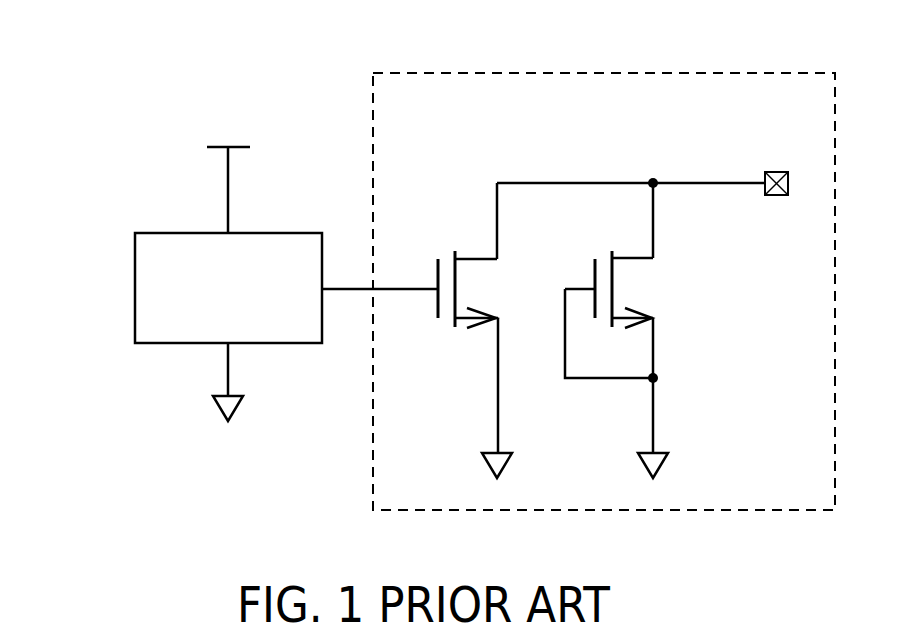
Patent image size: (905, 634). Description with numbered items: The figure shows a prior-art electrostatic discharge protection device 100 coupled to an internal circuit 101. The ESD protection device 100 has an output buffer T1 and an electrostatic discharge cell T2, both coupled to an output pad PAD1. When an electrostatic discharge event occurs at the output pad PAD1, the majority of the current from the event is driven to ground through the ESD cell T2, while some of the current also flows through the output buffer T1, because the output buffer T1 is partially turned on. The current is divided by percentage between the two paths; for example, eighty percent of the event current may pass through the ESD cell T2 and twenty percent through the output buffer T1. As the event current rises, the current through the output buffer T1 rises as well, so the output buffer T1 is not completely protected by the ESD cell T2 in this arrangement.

The electrostatic discharge (ESD) protection device 100 is at (578, 255).
The internal circuit 101 is at (135, 292).
The output buffer T1 is at (478, 330).
The electrostatic discharge (ESD) cell T2 is at (622, 330).
The output pad PAD1 is at (778, 170).